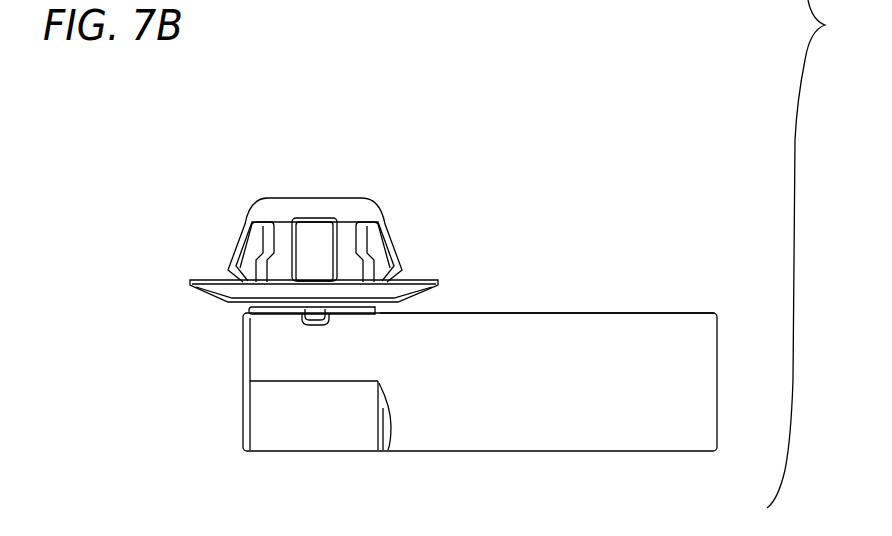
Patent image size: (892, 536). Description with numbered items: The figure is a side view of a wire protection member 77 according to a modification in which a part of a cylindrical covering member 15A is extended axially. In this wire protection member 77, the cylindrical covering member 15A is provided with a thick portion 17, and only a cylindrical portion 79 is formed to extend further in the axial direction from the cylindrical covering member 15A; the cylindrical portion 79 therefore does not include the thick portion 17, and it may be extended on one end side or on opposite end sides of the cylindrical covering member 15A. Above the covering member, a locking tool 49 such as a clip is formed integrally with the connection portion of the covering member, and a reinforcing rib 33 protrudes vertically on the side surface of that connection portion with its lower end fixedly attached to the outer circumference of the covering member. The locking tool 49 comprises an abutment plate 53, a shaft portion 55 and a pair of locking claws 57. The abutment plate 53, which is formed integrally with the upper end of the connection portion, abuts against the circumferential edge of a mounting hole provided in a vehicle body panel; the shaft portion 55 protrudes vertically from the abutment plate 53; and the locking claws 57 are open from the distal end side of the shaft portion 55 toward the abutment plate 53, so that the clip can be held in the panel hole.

The wire protection member 77 is at (635, 178).
The cylindrical covering member 15A is at (233, 428).
The cylindrical portion 79 is at (673, 311).
The thick portion 17 is at (392, 432).
The reinforcing rib 33 is at (315, 325).
The abutment plate 53 is at (424, 275).
The locking tool 49 is at (357, 192).
The shaft portion 55 is at (310, 228).
The locking claw 57 is at (233, 253).